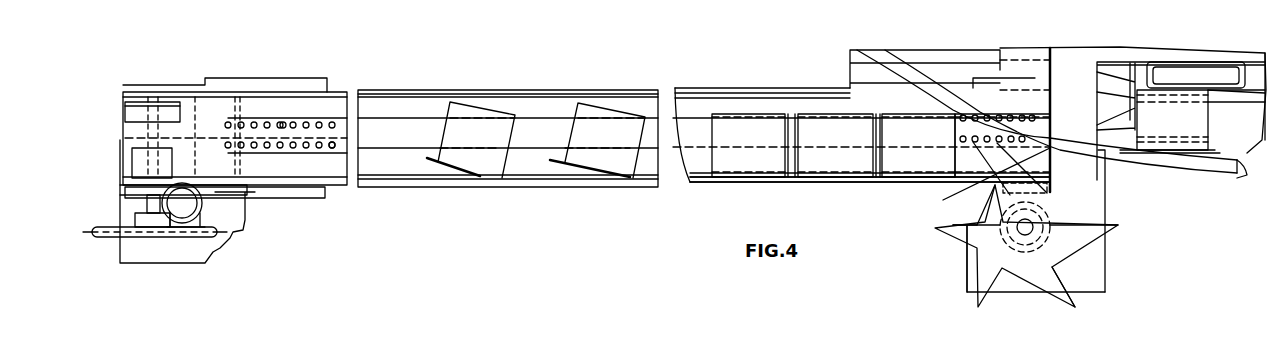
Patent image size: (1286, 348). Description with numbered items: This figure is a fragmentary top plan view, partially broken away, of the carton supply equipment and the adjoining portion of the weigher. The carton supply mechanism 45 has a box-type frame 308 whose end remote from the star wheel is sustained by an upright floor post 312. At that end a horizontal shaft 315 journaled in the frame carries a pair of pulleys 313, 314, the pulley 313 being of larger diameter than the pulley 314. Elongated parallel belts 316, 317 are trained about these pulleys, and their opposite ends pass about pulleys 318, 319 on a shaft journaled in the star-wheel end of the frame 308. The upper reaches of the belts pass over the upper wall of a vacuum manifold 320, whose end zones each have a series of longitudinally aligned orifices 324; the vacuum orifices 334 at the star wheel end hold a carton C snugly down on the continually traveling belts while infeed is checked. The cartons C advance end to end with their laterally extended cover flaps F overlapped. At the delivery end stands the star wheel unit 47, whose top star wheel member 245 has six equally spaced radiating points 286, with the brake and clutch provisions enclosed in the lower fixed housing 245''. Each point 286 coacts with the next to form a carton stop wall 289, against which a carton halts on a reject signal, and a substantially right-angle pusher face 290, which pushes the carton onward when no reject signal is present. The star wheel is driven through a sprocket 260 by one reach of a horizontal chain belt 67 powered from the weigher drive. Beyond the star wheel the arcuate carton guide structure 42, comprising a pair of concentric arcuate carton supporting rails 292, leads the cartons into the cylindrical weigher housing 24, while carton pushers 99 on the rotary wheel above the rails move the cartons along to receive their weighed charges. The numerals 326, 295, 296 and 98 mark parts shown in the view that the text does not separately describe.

The pulley 313 is at (130, 112).
The pulley 314 is at (140, 144).
The horizontal shaft 315 is at (145, 202).
The upright floor post 312 is at (185, 202).
The pivot bar 326 is at (104, 226).
The vacuum manifold 320 is at (310, 128).
The orifices 324 is at (331, 143).
The belt 316 is at (377, 107).
The belt 317 is at (373, 158).
The carton C is at (507, 112).
The cover flaps F is at (425, 158).
The carton supply mechanism 45 is at (708, 185).
The box-type frame 308 is at (842, 183).
The pulley 319 is at (967, 80).
The vacuum orifices 334 is at (957, 118).
The pulley 318 is at (955, 183).
The horizontal chain belt 67 is at (1050, 172).
The housing 295 is at (1097, 72).
The window 296 is at (1177, 82).
The carton supporting rails 292 is at (1130, 103).
The carton pushers 99 is at (1213, 93).
The base plate 98 is at (1189, 128).
The arcuate carton supporting and guiding rail structure 42 is at (1232, 147).
The cylindrical weigher housing 24 is at (1235, 167).
The pusher face 290 is at (1105, 190).
The sprocket 260 is at (1070, 225).
The top star wheel member 245 is at (1016, 246).
The lower fixed housing 245'' is at (1105, 287).
The carton stop wall 289 is at (975, 185).
The radiating points 286 is at (953, 225).
The star wheel unit 47 is at (952, 247).